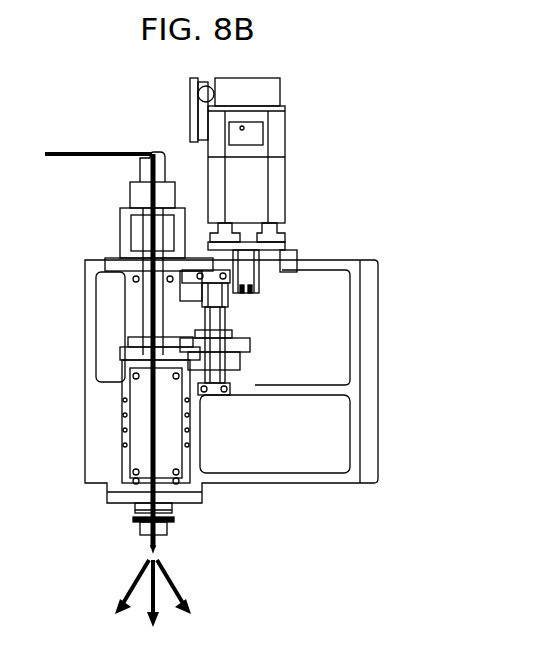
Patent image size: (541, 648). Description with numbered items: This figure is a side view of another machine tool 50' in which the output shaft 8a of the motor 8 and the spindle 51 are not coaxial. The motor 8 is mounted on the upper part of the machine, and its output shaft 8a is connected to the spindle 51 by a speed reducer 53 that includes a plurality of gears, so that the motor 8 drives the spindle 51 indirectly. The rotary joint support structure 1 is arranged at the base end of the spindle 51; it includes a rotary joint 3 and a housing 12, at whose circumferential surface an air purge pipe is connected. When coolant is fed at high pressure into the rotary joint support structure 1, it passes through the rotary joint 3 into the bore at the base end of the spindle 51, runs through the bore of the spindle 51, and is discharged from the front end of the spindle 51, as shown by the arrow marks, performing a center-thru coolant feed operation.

The rotary joint support structure 1 is at (170, 138).
The rotary joint 3 is at (145, 168).
The housing 12 is at (145, 193).
The motor 8 is at (258, 182).
The output shaft 8a is at (252, 278).
The speed reducer 53 is at (256, 354).
The spindle 51 is at (148, 448).
The machine tool 50' is at (300, 381).